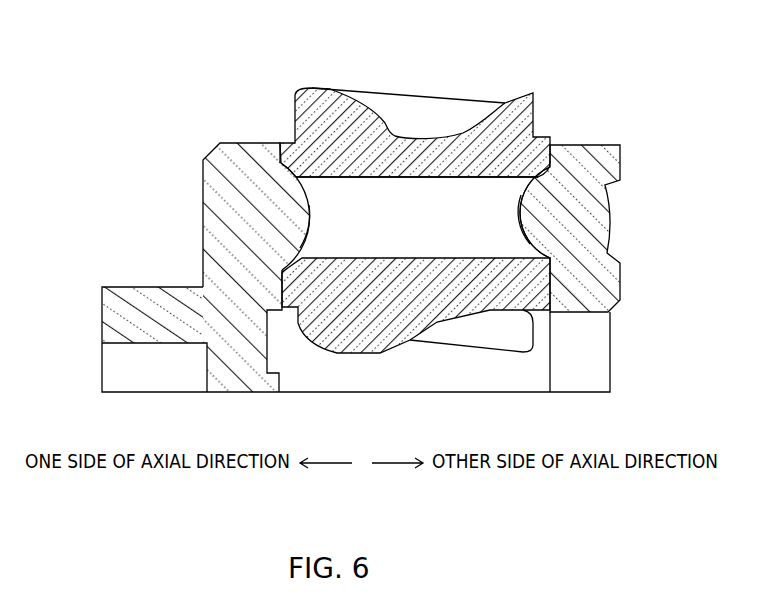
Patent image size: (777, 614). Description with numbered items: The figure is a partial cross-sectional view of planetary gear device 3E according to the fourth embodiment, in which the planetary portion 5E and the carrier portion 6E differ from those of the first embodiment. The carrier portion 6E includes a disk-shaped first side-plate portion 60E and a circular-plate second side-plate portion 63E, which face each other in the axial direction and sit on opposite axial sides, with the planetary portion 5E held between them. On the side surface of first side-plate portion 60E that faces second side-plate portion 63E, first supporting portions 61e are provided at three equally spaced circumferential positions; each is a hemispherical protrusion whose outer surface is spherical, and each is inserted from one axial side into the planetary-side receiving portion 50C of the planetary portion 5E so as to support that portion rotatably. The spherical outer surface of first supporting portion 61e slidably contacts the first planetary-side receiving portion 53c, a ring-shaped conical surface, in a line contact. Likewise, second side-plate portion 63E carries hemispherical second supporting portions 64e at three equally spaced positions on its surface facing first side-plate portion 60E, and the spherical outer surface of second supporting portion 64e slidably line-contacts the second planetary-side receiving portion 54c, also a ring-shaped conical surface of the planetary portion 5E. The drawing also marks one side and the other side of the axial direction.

The planetary portion 5E is at (415, 178).
The carrier portion 6E is at (237, 227).
The second side-plate portion 63E is at (561, 199).
The first side-plate portion 60E is at (223, 180).
The planetary gear device 3E is at (79, 275).
The first planetary-side receiving portion 53c is at (310, 170).
The first supporting portion 61e is at (304, 231).
The second supporting portion 64e is at (528, 243).
The second planetary-side receiving portion 54c is at (603, 186).
The planetary-side receiving portion 50C is at (440, 178).